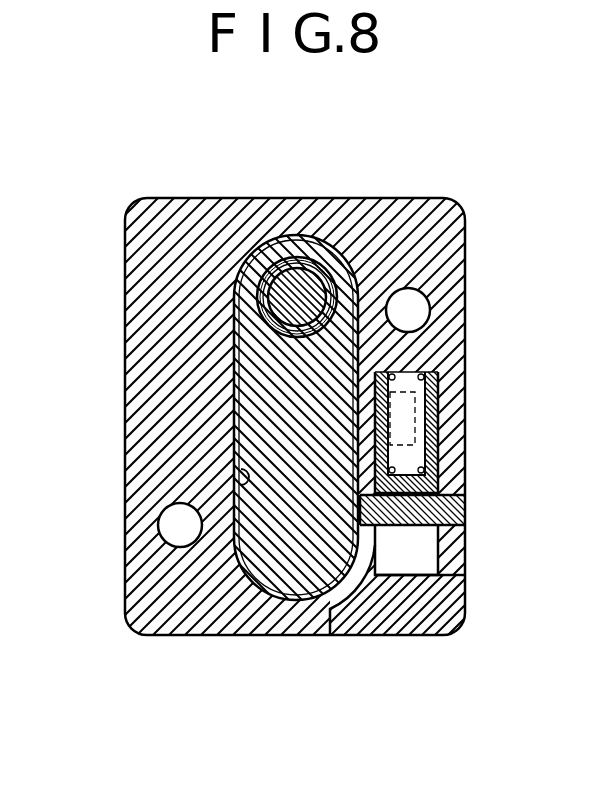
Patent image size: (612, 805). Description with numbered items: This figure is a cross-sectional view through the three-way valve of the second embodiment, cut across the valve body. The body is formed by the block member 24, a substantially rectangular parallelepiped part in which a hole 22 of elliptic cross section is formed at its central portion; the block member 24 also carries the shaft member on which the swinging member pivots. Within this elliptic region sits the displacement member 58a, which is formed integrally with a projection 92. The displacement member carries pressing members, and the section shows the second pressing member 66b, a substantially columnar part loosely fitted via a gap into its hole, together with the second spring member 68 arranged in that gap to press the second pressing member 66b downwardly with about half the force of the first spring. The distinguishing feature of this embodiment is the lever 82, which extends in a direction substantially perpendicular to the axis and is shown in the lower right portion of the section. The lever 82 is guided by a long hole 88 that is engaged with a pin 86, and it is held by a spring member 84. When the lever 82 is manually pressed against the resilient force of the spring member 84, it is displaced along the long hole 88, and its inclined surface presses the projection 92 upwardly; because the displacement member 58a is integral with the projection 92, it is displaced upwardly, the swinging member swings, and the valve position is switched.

The block member 24 is at (147, 277).
The displacement member 58a is at (276, 396).
The second pressing member 66b is at (291, 256).
The second spring member 68 is at (352, 256).
The hole 22 is at (232, 486).
The spring member 84 is at (440, 357).
The projection 92 is at (465, 387).
The pin 86 is at (455, 509).
The long hole 88 is at (412, 574).
The lever 82 is at (405, 625).